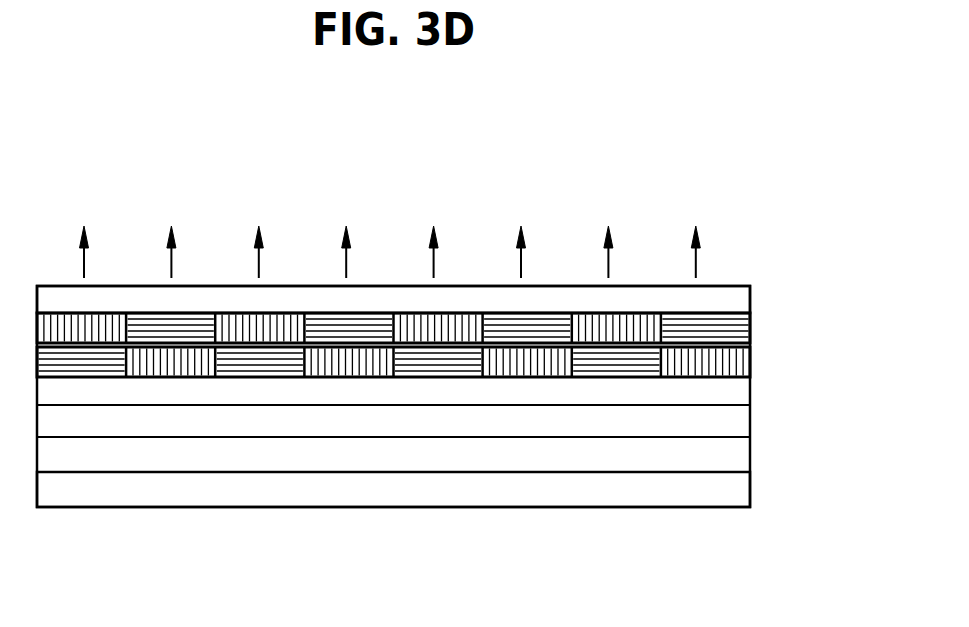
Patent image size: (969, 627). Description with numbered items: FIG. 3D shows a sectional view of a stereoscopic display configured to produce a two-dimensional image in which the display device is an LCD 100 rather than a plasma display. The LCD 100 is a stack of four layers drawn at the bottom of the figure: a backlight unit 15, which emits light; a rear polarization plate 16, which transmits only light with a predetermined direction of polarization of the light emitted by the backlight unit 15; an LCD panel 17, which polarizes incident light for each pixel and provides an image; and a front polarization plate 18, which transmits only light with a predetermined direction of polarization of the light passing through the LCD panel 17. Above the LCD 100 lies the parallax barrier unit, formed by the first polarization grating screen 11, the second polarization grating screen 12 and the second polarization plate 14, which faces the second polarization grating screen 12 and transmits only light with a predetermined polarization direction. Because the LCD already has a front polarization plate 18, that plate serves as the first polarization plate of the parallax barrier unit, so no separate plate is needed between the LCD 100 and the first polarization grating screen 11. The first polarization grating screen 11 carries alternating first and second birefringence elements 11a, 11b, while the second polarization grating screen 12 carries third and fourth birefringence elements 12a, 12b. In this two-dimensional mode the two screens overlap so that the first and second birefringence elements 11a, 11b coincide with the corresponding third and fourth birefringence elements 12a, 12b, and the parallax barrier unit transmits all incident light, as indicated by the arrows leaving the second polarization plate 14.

The LCD 100 is at (460, 442).
The first polarization grating screen 11 is at (424, 457).
The first birefringence element 11a is at (83, 365).
The second birefringence element 11b is at (179, 367).
The second polarization grating screen 12 is at (417, 283).
The third birefringence element 12a is at (60, 323).
The fourth birefringence element 12b is at (155, 328).
The second polarization plate 14 is at (743, 299).
The backlight unit 15 is at (425, 490).
The rear polarization plate 16 is at (743, 458).
The LCD panel 17 is at (743, 424).
The front polarization plate 18 is at (743, 394).